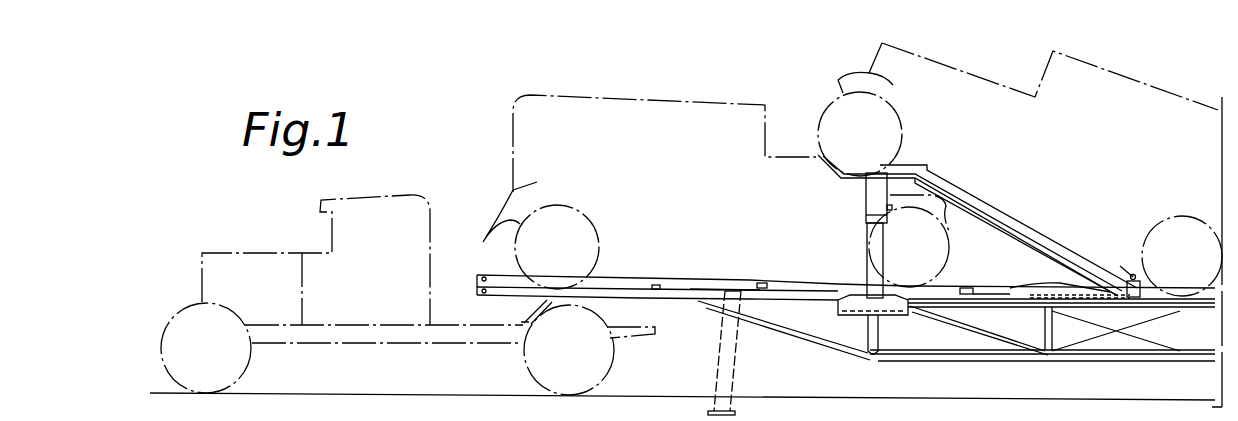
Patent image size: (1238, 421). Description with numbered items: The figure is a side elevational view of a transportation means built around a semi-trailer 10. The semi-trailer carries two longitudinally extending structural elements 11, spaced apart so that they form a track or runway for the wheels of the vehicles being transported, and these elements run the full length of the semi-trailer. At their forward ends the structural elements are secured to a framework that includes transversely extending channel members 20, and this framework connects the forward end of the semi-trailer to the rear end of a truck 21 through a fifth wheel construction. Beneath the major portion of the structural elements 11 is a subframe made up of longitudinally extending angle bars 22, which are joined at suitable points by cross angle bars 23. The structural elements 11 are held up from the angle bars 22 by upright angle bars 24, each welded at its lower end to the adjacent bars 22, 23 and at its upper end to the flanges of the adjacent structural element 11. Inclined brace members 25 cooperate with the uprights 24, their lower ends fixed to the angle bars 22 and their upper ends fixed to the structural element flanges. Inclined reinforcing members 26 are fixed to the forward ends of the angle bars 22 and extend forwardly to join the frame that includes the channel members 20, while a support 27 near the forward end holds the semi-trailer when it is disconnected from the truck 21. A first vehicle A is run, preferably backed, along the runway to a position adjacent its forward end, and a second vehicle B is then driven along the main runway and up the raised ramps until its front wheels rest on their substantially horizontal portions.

The semi-trailer 10 is at (804, 283).
The longitudinally extending structural elements 11 is at (713, 285).
The transversely extending channel members 20 is at (657, 284).
The truck 21 is at (455, 318).
The longitudinally extending angle bars 22 is at (963, 356).
The cross angle bars 23 is at (880, 358).
The upright angle bars 24 is at (1048, 326).
The inclined brace members 25 is at (999, 343).
The inclined reinforcing members 26 is at (803, 335).
The support 27 is at (727, 372).
The vehicle A is at (703, 107).
The second vehicle B is at (1167, 94).